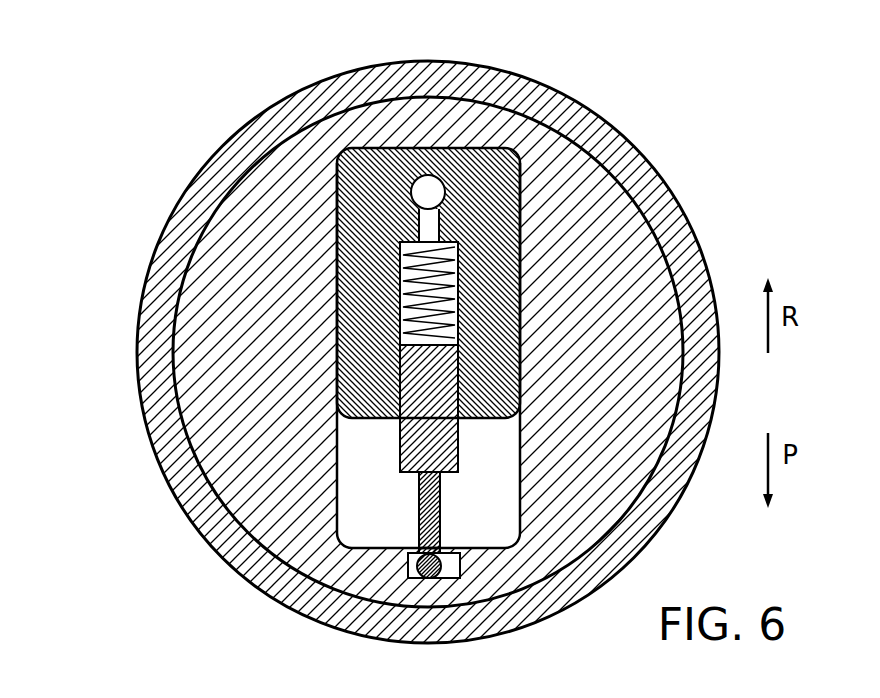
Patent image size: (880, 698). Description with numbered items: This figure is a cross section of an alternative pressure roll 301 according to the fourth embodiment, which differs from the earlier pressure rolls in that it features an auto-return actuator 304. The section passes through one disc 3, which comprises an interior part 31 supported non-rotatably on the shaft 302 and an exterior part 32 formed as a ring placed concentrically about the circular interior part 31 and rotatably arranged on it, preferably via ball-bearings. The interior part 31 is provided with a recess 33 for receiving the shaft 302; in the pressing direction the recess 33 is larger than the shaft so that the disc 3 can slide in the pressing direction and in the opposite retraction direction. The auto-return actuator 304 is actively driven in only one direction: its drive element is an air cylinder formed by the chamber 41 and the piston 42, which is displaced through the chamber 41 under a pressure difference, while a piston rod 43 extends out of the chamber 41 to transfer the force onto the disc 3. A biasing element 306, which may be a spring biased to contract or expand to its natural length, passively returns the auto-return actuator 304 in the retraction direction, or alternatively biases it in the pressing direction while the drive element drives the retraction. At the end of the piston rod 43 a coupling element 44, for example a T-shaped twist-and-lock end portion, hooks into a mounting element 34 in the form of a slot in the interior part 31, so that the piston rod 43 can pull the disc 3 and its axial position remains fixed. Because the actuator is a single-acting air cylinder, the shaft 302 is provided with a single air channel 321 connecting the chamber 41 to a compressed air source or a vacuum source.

The pressure roll 301 is at (180, 90).
The disc 3 is at (625, 130).
The exterior part 32 is at (163, 437).
The interior part 31 is at (227, 500).
The recess 33 is at (352, 532).
The shaft 302 is at (350, 246).
The air channel 321 is at (424, 187).
The chamber 41 is at (458, 272).
The biasing element 306 is at (400, 313).
The piston 42 is at (458, 455).
The piston rod 43 is at (435, 510).
The auto-return actuator 304 is at (443, 526).
The mounting element 34 is at (448, 653).
The coupling element 44 is at (427, 572).